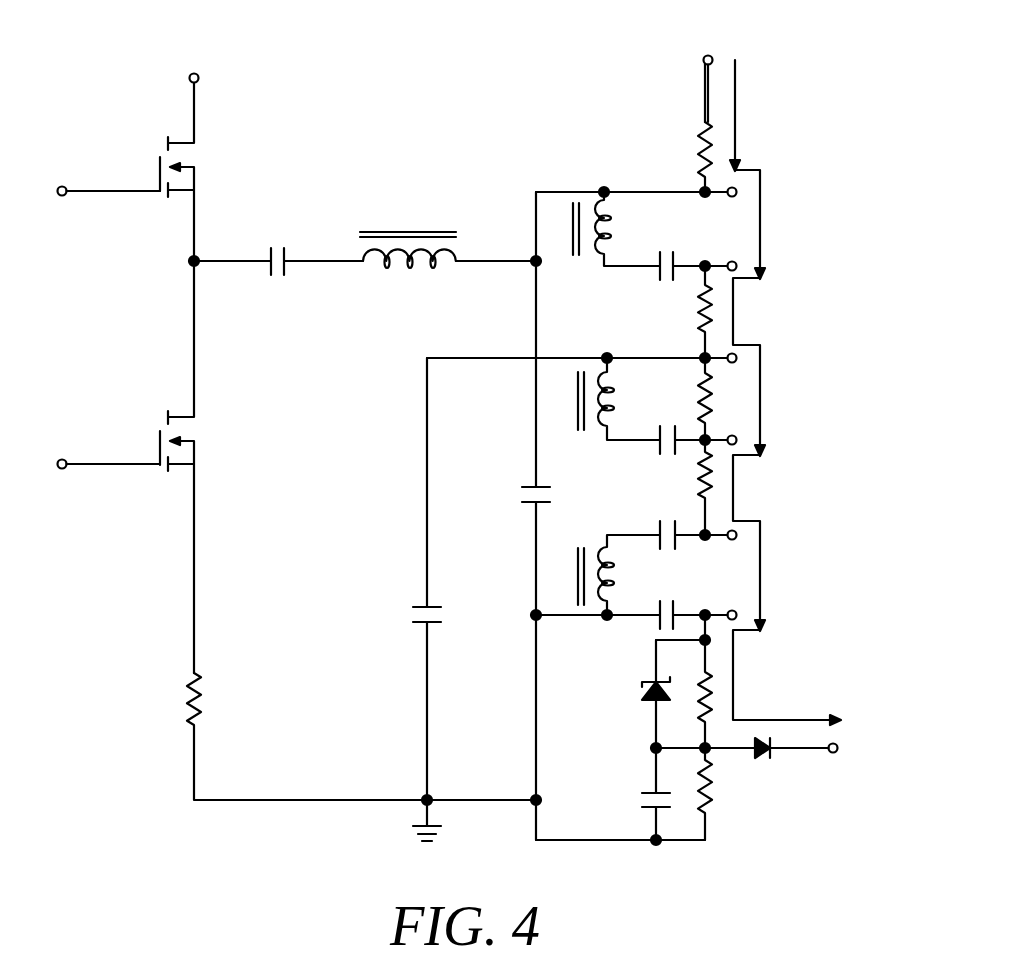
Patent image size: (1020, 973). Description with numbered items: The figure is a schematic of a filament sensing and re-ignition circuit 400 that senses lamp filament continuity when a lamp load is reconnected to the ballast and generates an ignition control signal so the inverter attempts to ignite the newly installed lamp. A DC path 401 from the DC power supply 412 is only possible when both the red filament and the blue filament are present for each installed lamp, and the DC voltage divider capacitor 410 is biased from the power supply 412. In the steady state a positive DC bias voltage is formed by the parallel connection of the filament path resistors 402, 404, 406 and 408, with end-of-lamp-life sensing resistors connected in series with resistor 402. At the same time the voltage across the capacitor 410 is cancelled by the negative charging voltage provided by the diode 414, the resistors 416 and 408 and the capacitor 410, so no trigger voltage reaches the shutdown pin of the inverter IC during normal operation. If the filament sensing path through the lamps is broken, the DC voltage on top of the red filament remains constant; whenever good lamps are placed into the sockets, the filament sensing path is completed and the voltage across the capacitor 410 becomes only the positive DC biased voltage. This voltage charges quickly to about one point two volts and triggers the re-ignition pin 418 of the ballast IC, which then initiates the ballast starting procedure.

The band switching circuit 400 is at (769, 482).
The DC path 401 is at (760, 180).
The filament path resistor 402 is at (703, 140).
The filament path resistor 404 is at (703, 312).
The filament path resistor 406 is at (704, 400).
The filament path resistor 408 is at (706, 796).
The DC voltage divider capacitor 410 is at (650, 793).
The DC power supply 412 is at (706, 56).
The diode 414 is at (647, 697).
The resistor 416 is at (706, 678).
The re-ignition pin 418 is at (833, 753).